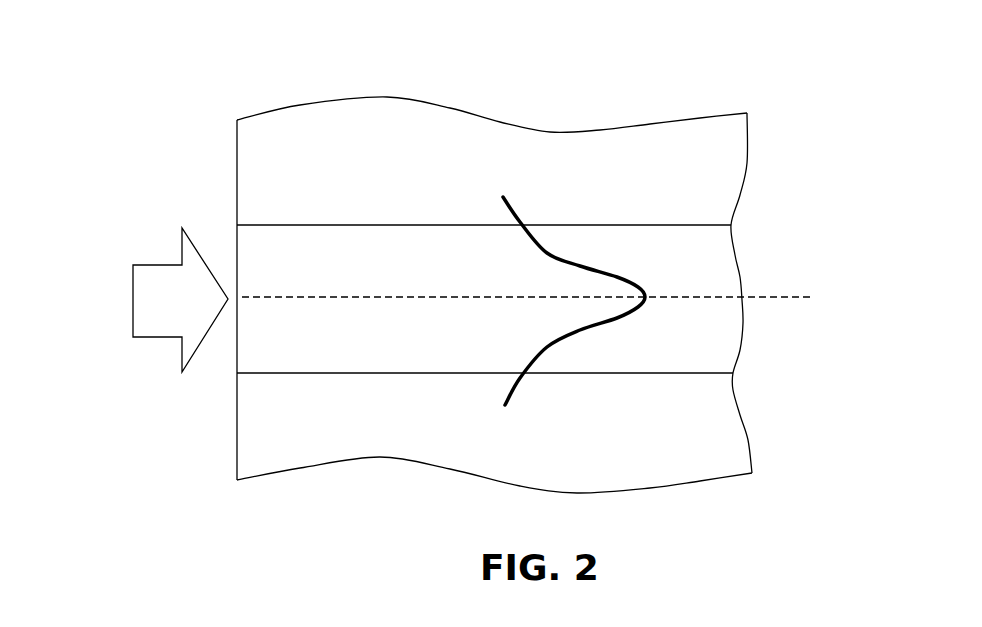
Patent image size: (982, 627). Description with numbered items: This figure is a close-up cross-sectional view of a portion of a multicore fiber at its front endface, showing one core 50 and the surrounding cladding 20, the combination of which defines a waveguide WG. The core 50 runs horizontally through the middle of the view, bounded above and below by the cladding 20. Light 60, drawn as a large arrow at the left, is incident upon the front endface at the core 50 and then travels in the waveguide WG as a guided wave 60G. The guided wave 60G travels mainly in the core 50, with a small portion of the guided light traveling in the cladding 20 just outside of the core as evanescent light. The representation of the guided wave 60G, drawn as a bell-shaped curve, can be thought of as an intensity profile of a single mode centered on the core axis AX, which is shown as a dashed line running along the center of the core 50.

The waveguide WG is at (461, 260).
The cladding 20 is at (358, 180).
The core 50 is at (366, 335).
The light 60 is at (192, 318).
The guided wave 60G is at (575, 262).
The core axis AX is at (768, 298).